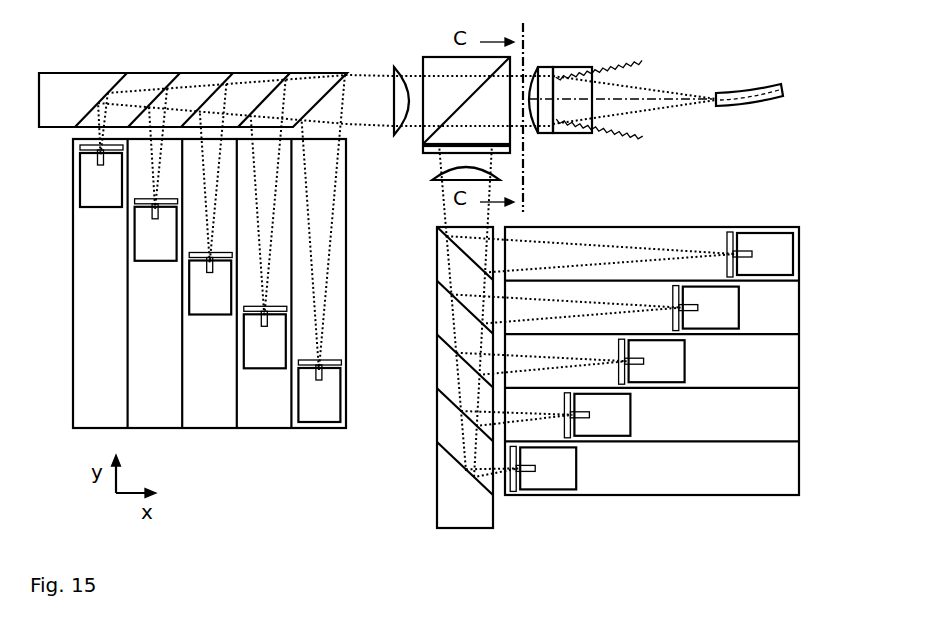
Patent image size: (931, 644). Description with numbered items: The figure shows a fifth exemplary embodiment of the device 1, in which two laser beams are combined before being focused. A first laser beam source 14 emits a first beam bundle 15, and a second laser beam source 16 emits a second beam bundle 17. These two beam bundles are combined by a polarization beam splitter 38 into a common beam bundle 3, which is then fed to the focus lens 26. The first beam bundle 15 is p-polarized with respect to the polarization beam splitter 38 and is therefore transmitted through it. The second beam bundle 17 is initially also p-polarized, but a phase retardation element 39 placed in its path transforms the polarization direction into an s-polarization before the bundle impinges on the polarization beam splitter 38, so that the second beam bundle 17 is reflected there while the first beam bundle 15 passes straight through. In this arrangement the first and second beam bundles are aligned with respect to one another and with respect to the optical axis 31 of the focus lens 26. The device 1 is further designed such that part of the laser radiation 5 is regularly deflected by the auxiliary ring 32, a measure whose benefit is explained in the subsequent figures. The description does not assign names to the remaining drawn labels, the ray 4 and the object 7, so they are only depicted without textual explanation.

The device 1 is at (832, 29).
The common beam bundle 3 is at (516, 73).
The lower marginal ray 4 is at (627, 136).
The laser radiation 5 is at (616, 56).
The object / target 7 is at (749, 81).
The first laser beam source 14 is at (209, 313).
The first beam bundle 15 is at (382, 86).
The second laser beam source 16 is at (773, 162).
The second beam bundle 17 is at (504, 172).
The focus lens 26 is at (551, 67).
The optical axis 31 is at (622, 82).
The auxiliary ring 32 is at (585, 113).
The polarization beam splitter 38 is at (443, 75).
The phase retardation element 39 is at (438, 161).